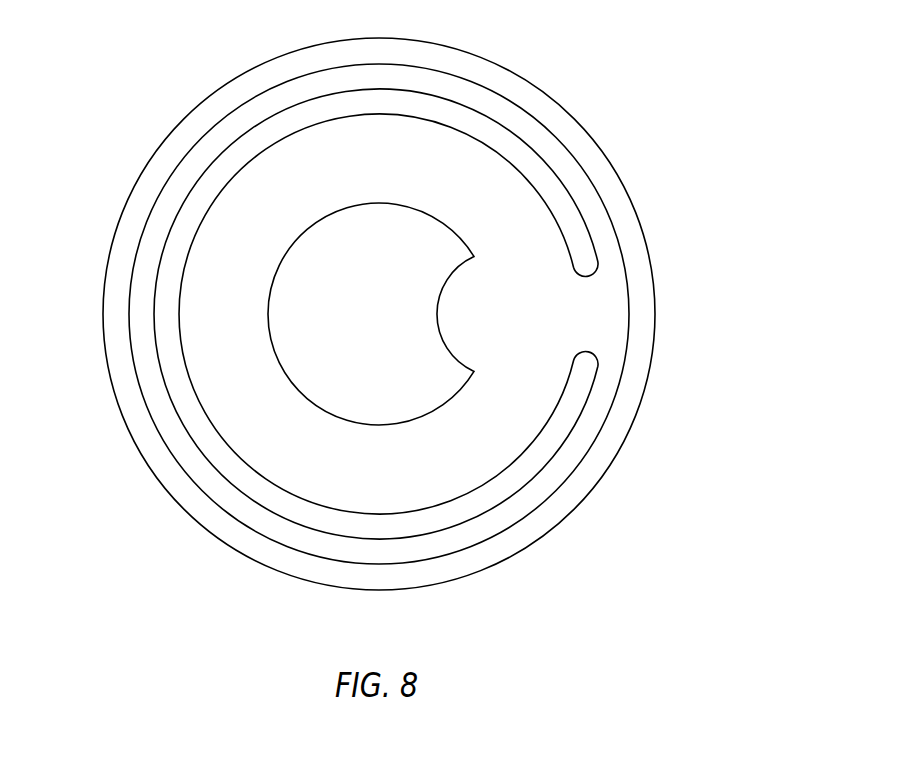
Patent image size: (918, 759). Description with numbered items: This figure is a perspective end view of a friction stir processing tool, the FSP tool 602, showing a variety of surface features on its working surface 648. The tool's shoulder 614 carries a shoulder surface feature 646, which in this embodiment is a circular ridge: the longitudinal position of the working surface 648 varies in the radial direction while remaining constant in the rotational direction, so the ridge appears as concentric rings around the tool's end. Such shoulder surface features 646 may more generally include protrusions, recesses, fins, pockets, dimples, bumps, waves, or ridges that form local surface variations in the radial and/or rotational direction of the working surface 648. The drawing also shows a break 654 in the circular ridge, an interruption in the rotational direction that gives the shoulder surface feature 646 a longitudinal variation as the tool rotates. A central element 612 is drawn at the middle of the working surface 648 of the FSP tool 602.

The FSP tool 602 is at (630, 98).
The shoulder surface feature 646 is at (632, 227).
The shoulder 614 is at (562, 458).
The break 654 is at (587, 314).
The central core 612 is at (378, 427).
The working surface 648 is at (220, 353).